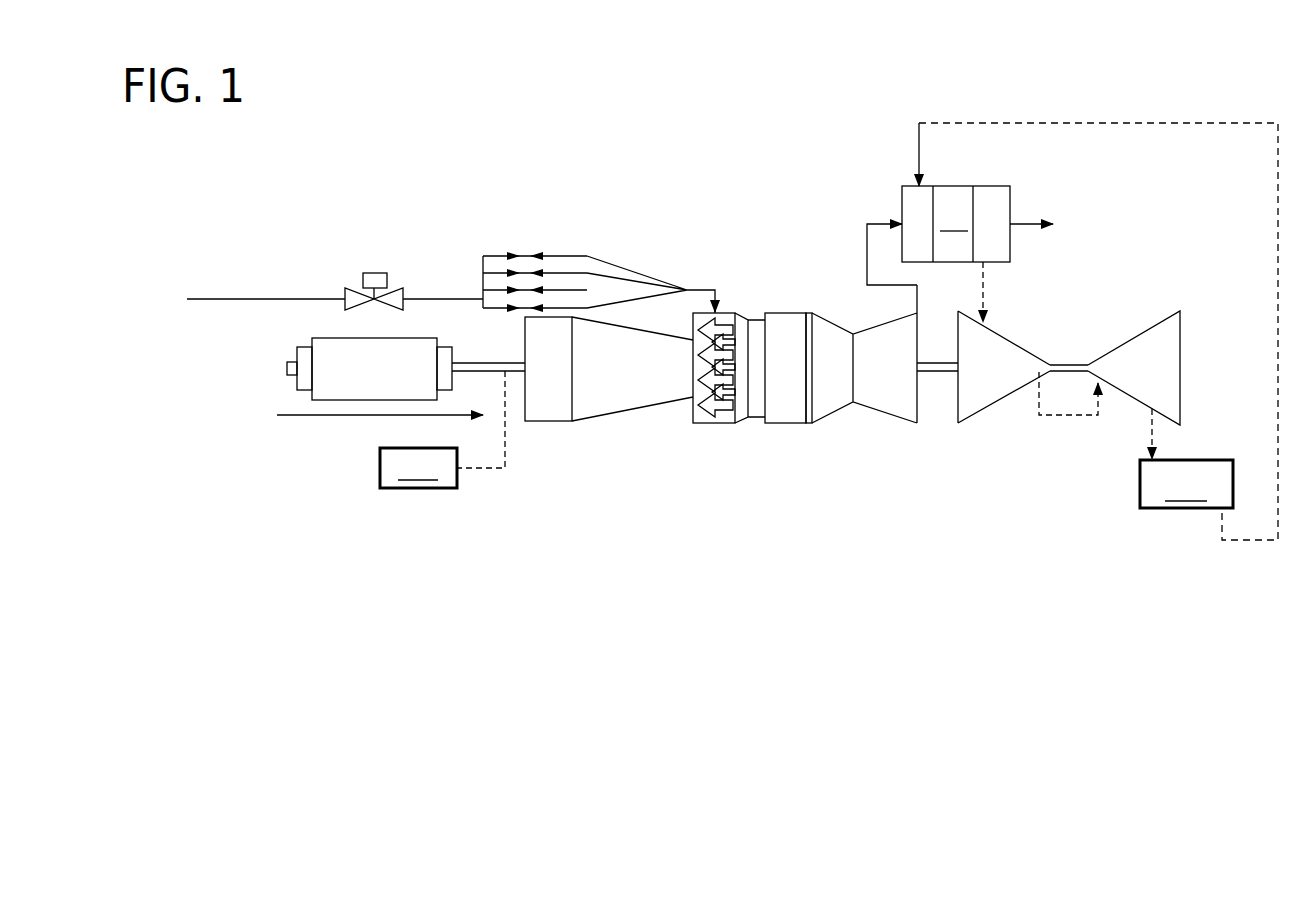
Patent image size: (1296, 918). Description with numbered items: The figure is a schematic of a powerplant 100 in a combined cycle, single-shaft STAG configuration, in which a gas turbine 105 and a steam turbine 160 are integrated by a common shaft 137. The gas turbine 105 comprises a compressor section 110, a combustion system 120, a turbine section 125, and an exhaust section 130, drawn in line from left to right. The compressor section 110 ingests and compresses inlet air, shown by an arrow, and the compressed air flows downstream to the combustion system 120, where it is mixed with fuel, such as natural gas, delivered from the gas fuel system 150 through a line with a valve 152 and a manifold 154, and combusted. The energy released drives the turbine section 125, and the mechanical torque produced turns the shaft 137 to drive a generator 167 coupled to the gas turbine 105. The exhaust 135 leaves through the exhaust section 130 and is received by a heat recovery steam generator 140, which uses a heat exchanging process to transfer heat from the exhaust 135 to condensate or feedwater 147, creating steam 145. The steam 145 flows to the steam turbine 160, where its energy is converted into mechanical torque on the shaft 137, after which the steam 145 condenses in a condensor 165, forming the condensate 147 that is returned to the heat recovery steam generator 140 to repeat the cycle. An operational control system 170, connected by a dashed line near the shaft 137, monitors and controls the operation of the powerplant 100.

The powerplant 100 is at (146, 344).
The gas turbine 105 is at (695, 455).
The compressor section 110 is at (583, 428).
The combustion system 120 is at (742, 433).
The turbine section 125 is at (797, 433).
The exhaust section 130 is at (855, 435).
The exhaust 135 is at (866, 254).
The shaft 137 is at (480, 363).
The heat recovery steam generator 140 is at (956, 224).
The steam 145 is at (985, 280).
The condensate or feedwater 147 is at (962, 123).
The gas fuel system 150 is at (243, 290).
The fuel control valve 152 is at (363, 283).
The fuel manifold 154 is at (493, 255).
The steam turbine 160 is at (997, 430).
The condensor 165 is at (1186, 484).
The generator 167 is at (330, 340).
The operational control system 170 is at (442, 429).